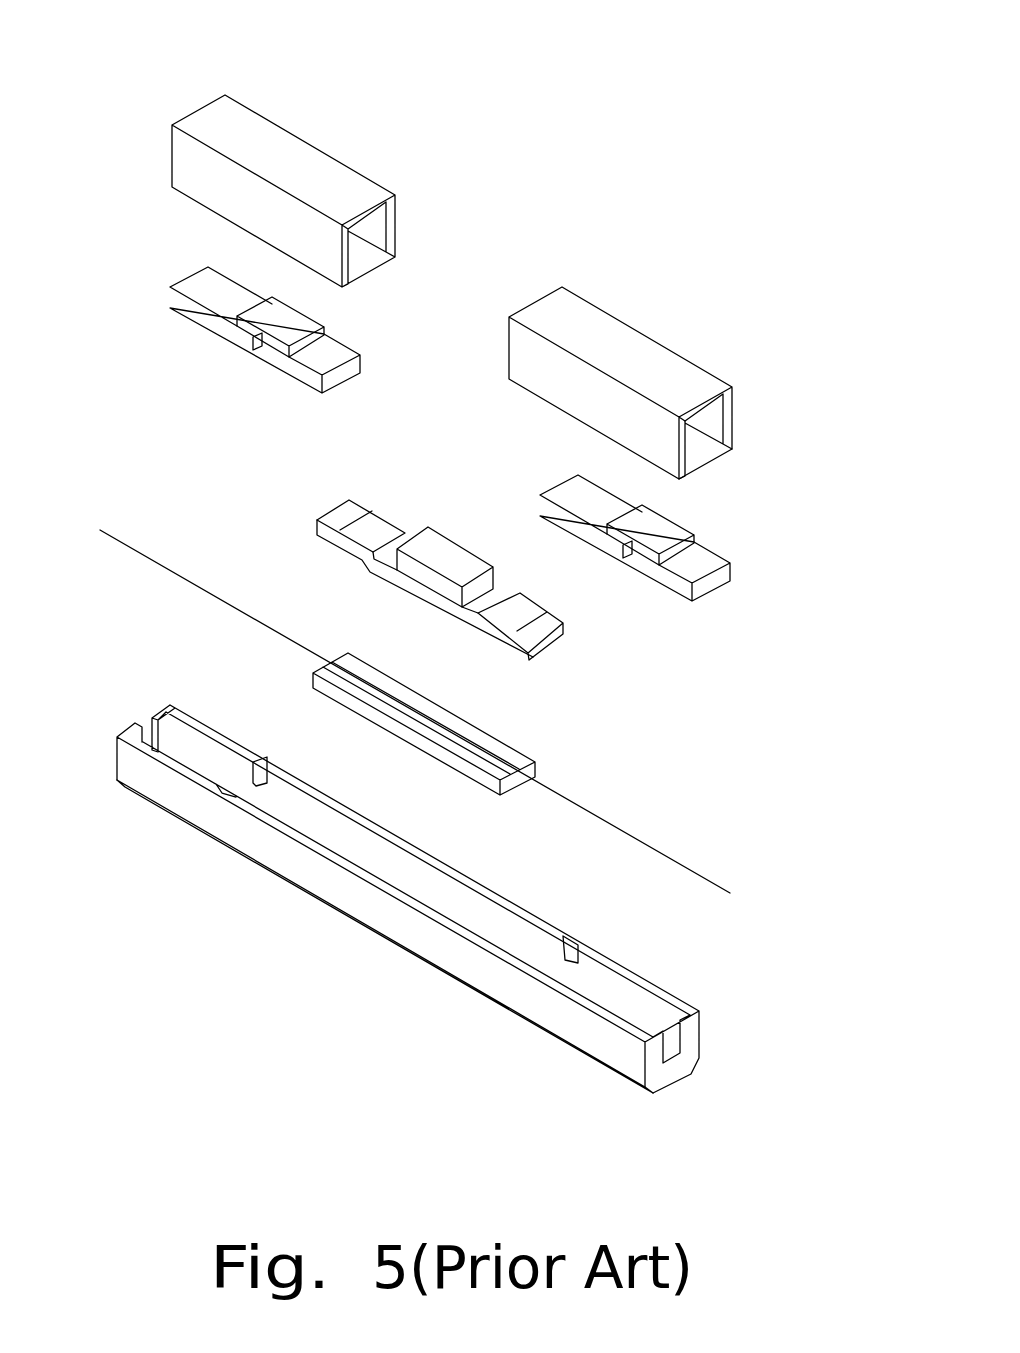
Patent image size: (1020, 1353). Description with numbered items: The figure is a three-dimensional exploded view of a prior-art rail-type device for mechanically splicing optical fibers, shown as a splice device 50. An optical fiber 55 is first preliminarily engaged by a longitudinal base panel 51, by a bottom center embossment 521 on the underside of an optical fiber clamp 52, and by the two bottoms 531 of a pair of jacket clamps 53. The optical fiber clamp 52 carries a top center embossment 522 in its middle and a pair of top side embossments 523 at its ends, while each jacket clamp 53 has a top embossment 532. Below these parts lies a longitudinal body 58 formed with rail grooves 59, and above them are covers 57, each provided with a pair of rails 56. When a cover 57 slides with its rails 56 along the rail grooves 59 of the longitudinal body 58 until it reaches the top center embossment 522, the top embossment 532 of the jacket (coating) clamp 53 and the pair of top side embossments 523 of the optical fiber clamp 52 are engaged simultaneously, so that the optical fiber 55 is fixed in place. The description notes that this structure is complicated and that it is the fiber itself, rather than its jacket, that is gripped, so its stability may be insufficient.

The splice device 50 is at (618, 125).
The longitudinal base panel 51 is at (502, 750).
The optical fiber clamp 52 is at (417, 525).
The bottom center embossment 521 is at (415, 597).
The top center embossment 522 is at (463, 557).
The top side embossments 523 is at (378, 522).
The jacket clamp 53 is at (237, 333).
The bottom of jacket clamp 531 is at (183, 315).
The top embossment 532 is at (293, 310).
The optical fiber 55 is at (663, 856).
The rails 56 is at (729, 447).
The cover 57 is at (298, 150).
The longitudinal body 58 is at (285, 862).
The rail grooves 59 is at (480, 997).